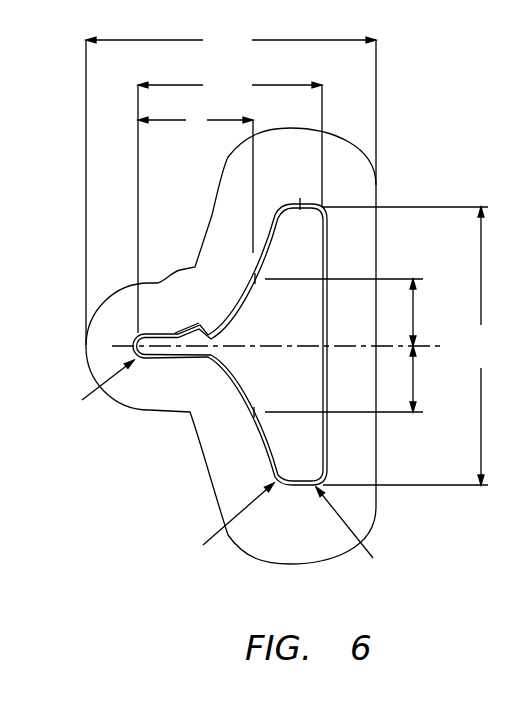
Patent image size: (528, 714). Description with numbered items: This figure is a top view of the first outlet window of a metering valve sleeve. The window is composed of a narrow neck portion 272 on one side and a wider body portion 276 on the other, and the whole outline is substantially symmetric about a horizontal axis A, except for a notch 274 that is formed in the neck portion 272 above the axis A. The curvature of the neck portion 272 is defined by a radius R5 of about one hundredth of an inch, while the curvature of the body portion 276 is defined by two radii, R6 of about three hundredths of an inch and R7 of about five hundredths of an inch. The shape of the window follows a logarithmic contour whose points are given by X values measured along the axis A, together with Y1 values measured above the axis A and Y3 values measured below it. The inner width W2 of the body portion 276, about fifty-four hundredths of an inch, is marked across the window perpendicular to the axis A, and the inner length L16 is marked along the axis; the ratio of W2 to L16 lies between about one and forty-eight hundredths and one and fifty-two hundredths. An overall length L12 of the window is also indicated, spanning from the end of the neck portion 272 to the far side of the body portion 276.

The neck portion 272 is at (203, 360).
The notch 274 is at (203, 360).
The body portion 276 is at (328, 266).
The length dimension L12 is at (231, 186).
The inner length L16 is at (230, 202).
The X values along axis A X is at (195, 181).
The inner width W2 is at (412, 346).
The Y1 values above axis A Y1 is at (357, 312).
The Y3 values below axis A Y3 is at (356, 379).
The radius R5 is at (95, 396).
The radius R6 is at (222, 526).
The radius R7 is at (360, 535).
The axis A is at (58, 347).